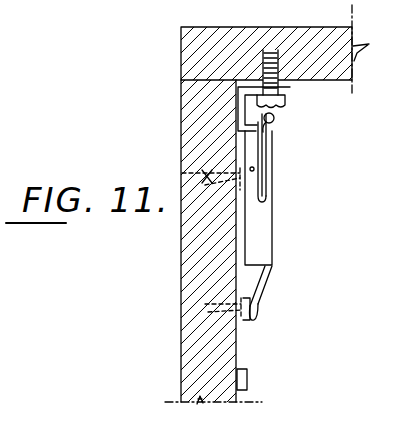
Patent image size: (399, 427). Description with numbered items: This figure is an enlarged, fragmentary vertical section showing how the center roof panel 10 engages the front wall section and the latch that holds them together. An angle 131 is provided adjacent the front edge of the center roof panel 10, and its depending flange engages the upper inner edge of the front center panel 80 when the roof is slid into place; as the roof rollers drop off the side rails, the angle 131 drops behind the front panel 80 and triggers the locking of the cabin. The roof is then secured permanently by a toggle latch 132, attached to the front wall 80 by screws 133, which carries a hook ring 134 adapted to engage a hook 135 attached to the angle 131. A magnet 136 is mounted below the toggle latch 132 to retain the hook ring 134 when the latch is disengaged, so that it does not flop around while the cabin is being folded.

The center roof panel 10 is at (299, 28).
The front center panel 80 is at (188, 250).
The angle 131 is at (288, 91).
The toggle latch 132 is at (269, 250).
The screws 133 is at (183, 175).
The hook ring 134 is at (268, 155).
The hook 135 is at (275, 124).
The magnet 136 is at (247, 385).